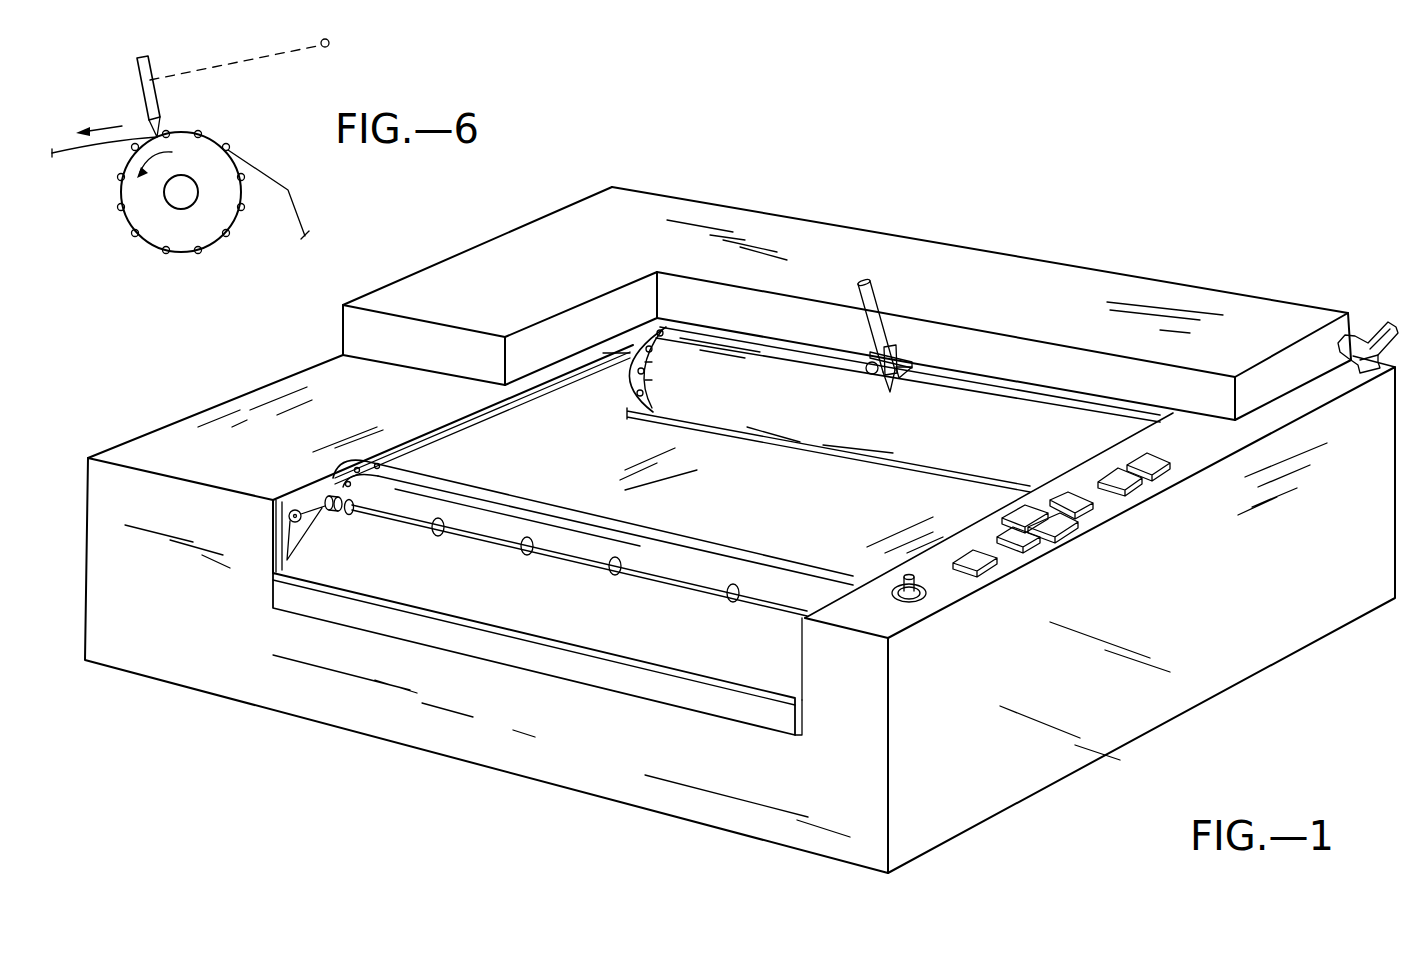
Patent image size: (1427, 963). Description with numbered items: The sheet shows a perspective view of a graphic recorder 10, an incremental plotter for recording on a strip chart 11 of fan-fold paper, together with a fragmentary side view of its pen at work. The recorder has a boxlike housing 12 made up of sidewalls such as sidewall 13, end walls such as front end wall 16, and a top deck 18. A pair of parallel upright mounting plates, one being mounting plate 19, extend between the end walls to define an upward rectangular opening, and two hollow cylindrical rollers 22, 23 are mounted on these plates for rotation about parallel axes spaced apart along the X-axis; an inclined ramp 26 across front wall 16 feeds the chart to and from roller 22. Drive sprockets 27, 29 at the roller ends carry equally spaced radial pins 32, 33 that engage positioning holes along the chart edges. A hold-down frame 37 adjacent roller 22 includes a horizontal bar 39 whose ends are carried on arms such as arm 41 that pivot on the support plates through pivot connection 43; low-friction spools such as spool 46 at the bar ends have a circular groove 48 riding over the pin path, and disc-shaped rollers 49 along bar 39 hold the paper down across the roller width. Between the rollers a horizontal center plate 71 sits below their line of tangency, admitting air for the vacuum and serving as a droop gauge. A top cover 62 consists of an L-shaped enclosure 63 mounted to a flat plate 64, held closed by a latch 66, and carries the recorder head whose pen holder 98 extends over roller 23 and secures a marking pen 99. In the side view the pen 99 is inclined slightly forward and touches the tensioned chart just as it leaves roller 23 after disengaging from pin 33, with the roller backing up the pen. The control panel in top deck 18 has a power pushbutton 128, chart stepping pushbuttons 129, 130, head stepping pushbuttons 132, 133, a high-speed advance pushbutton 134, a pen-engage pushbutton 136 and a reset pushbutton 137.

In FIG. 1, the graphic recorder 10 is at (1036, 228).
In FIG. 6, the strip chart 11 is at (286, 190).
In FIG. 1, the housing 12 is at (1256, 678).
In FIG. 1, the sidewall 13 is at (1022, 668).
In FIG. 1, the end wall 16 is at (574, 737).
In FIG. 1, the top deck 18 is at (1215, 442).
In FIG. 1, the mounting plate 19 is at (545, 434).
In FIG. 1, the cylindrical roller 22 is at (668, 542).
In FIG. 6, the cylindrical roller 23 is at (140, 216).
In FIG. 1, the cylindrical roller 23 is at (831, 430).
In FIG. 1, the ramp 26 is at (426, 633).
In FIG. 1, the drive sprocket 27 is at (338, 480).
In FIG. 1, the drive sprocket 29 is at (632, 366).
In FIG. 6, the sprocket pins 32 is at (165, 128).
In FIG. 1, the sprocket pins 32 is at (668, 327).
In FIG. 6, the sprocket pin 33 is at (124, 155).
In FIG. 1, the sprocket pin 33 is at (652, 352).
In FIG. 1, the hold-down frame 37 is at (492, 548).
In FIG. 1, the bar 39 is at (667, 579).
In FIG. 1, the arm 41 is at (300, 502).
In FIG. 1, the pivot connection 43 is at (292, 551).
In FIG. 1, the spool 46 is at (356, 506).
In FIG. 1, the circular groove 48 is at (331, 515).
In FIG. 1, the disc-shaped rollers 49 is at (446, 528).
In FIG. 1, the top cover 62 is at (510, 224).
In FIG. 1, the L-shaped enclosure 63 is at (1200, 298).
In FIG. 1, the flat plate 64 is at (283, 388).
In FIG. 1, the latch 66 is at (1376, 336).
In FIG. 1, the center plate 71 is at (893, 495).
In FIG. 1, the pen holder 98 is at (905, 380).
In FIG. 6, the marking pen 99 is at (135, 81).
In FIG. 1, the marking pen 99 is at (868, 297).
In FIG. 1, the power on/off pushbutton 128 is at (900, 587).
In FIG. 1, the pushbutton 129 is at (1027, 507).
In FIG. 1, the pushbutton 130 is at (1063, 526).
In FIG. 1, the pushbutton 132 is at (1023, 541).
In FIG. 1, the pushbutton 133 is at (1084, 501).
In FIG. 1, the pushbutton 134 is at (1114, 478).
In FIG. 1, the pushbutton 136 is at (1154, 468).
In FIG. 1, the pushbutton 137 is at (986, 564).